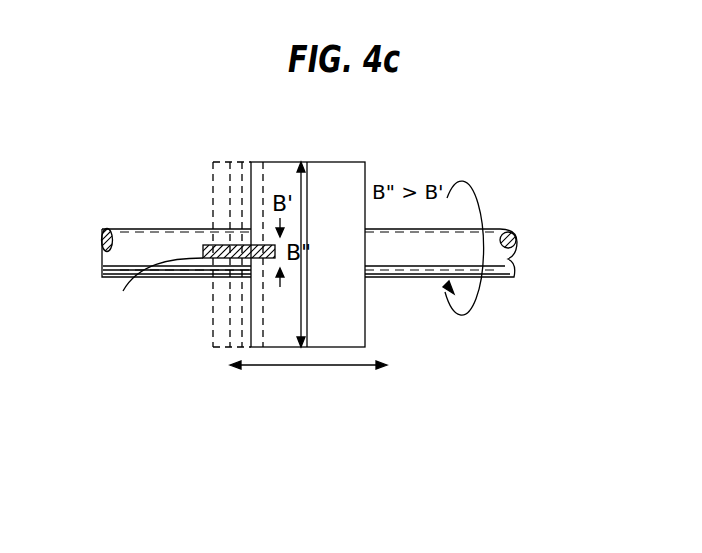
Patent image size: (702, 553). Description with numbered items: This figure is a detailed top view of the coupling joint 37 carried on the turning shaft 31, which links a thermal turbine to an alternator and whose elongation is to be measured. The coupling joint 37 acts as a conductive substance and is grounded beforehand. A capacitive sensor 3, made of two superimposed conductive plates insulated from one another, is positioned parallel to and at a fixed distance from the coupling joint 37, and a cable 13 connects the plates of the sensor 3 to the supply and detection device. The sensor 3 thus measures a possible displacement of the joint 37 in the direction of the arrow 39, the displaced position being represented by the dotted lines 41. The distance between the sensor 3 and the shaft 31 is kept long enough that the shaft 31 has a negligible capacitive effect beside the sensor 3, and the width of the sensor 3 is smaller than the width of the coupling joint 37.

The capacitive sensor 3 is at (203, 243).
The cable 13 is at (123, 291).
The turning shaft 31 is at (503, 277).
The coupling joint 37 is at (347, 182).
The arrow 39 is at (302, 365).
The dotted lines 41 is at (226, 180).